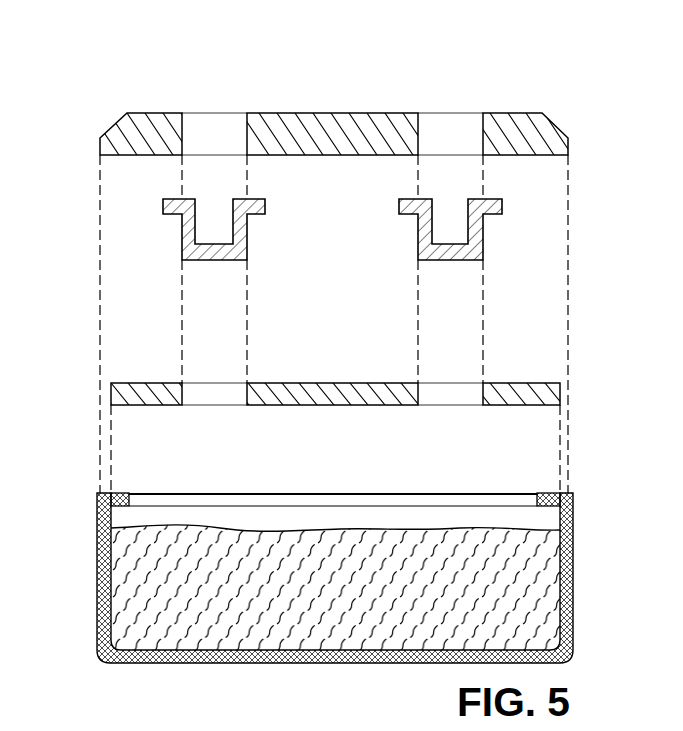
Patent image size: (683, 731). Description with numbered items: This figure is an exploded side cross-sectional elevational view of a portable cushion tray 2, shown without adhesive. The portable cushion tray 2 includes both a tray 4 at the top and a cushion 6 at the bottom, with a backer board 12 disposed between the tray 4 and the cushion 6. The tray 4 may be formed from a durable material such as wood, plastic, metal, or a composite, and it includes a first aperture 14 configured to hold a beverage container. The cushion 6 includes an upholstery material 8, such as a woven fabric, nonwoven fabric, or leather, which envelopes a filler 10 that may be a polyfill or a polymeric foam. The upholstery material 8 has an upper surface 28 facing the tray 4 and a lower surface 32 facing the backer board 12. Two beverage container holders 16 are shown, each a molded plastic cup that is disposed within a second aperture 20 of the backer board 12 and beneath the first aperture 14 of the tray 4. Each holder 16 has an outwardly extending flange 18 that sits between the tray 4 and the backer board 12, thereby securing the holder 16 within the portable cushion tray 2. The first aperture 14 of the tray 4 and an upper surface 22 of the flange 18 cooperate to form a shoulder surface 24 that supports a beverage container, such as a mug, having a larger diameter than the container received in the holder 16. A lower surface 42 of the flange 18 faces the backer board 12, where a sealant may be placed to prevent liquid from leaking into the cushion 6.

The portable cushion tray 2 is at (337, 370).
The tray 4 is at (552, 123).
The cushion 6 is at (337, 584).
The upholstery material 8 is at (574, 632).
The filler 10 is at (343, 622).
The backer board 12 is at (545, 393).
The first aperture 14 is at (230, 110).
The beverage container holder 16 is at (211, 262).
The flange 18 is at (268, 205).
The second aperture 20 is at (197, 377).
The upper surface of the flange 22 is at (172, 196).
The shoulder surface 24 is at (192, 196).
The upper surface of the upholstery material 28 is at (116, 491).
The lower surface of the upholstery material 32 is at (118, 509).
The lower surface of the flange 42 is at (161, 216).